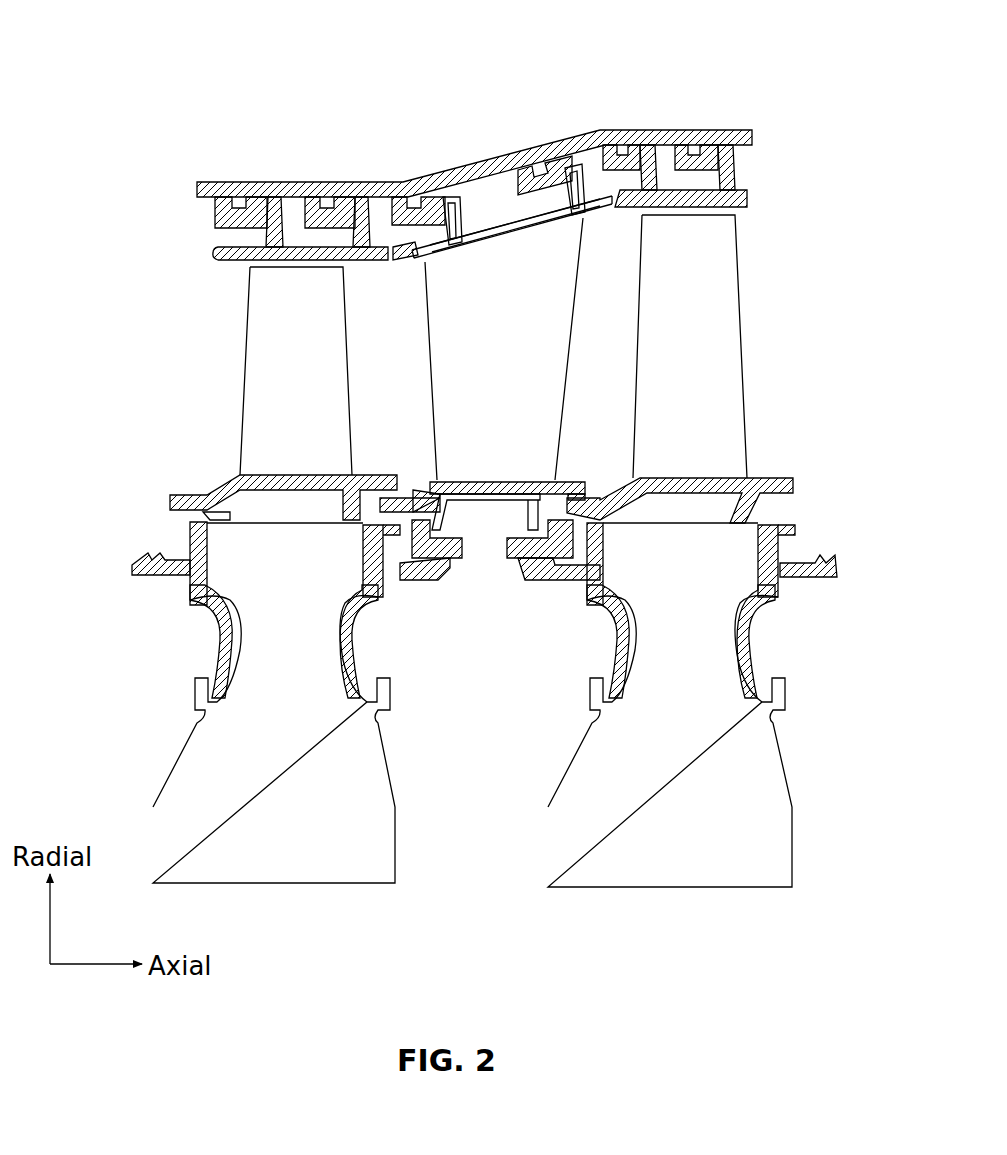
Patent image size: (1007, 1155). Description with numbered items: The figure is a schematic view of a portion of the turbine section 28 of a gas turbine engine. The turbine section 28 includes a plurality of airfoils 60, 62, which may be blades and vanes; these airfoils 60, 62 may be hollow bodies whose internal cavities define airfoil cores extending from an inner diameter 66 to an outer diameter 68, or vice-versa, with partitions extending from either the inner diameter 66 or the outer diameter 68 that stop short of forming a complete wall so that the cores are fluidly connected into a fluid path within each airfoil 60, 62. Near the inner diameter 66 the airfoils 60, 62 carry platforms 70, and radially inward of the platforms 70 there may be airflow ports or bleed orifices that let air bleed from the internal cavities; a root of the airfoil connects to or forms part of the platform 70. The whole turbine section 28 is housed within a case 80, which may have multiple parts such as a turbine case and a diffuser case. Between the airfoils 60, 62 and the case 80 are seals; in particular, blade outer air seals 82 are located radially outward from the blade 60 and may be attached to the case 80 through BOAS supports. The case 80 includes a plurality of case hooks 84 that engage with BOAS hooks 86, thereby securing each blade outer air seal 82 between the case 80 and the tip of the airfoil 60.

The turbine section 28 is at (166, 116).
The airfoil 60 is at (335, 370).
The airfoil 62 is at (552, 300).
The inner diameter 66 is at (430, 468).
The outer diameter 68 is at (232, 266).
The platform 70 is at (575, 481).
The case 80 is at (506, 152).
The blade outer air seal 82 is at (365, 262).
The case hook 84 is at (310, 207).
The BOAS hook 86 is at (264, 208).